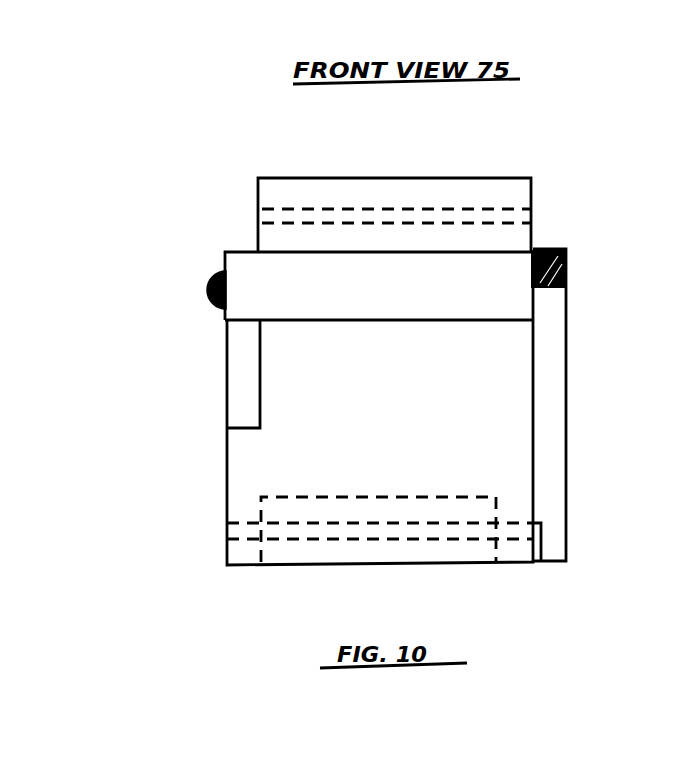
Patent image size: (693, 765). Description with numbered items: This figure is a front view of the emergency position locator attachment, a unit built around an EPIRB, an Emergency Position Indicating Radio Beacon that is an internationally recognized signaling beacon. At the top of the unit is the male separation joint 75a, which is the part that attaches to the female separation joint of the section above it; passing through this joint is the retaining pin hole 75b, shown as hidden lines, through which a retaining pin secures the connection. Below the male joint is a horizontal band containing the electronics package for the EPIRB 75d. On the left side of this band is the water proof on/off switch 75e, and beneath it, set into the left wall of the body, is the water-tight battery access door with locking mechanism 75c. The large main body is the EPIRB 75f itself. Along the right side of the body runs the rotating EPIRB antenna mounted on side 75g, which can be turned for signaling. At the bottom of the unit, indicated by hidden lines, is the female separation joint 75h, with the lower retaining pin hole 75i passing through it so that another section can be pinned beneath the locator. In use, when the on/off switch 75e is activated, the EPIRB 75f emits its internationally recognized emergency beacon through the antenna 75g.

The male separation joint 75a is at (470, 172).
The retaining pin hole 75b is at (535, 217).
The water-tight battery access door with locking mechanism 75c is at (222, 377).
The electronics package for EPIRB 75d is at (379, 286).
The water proof on/off switch 75e is at (205, 272).
The EPIRB 75f is at (384, 408).
The rotating EPIRB antenna 75g is at (578, 423).
The female separation joint 75h is at (410, 510).
The lower retaining pin hole 75i is at (227, 537).